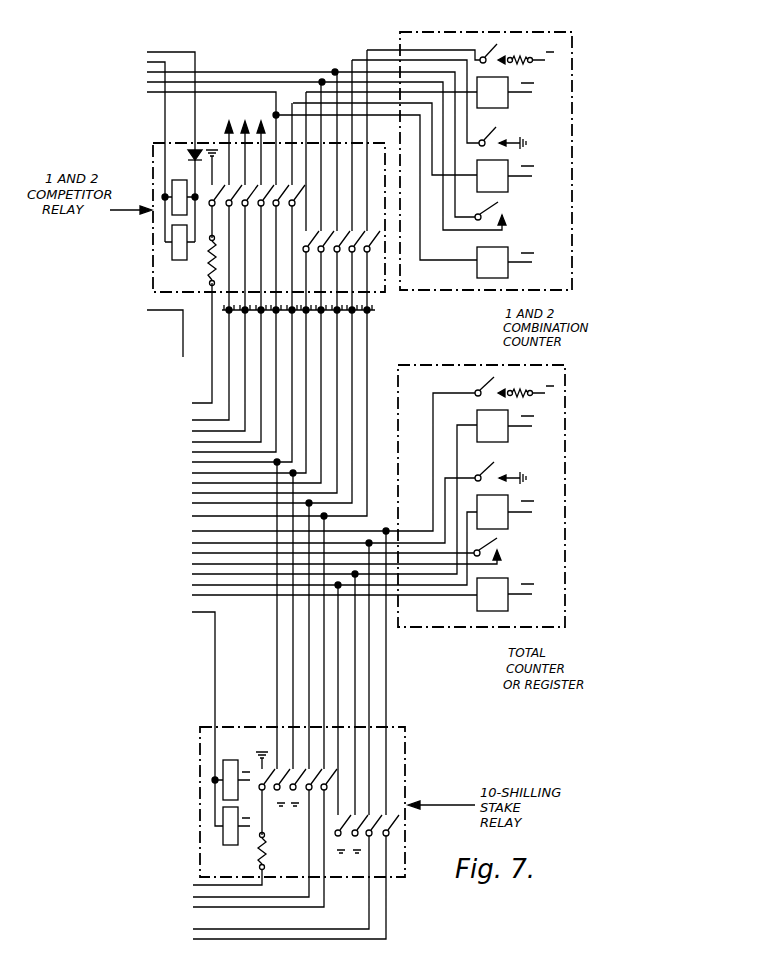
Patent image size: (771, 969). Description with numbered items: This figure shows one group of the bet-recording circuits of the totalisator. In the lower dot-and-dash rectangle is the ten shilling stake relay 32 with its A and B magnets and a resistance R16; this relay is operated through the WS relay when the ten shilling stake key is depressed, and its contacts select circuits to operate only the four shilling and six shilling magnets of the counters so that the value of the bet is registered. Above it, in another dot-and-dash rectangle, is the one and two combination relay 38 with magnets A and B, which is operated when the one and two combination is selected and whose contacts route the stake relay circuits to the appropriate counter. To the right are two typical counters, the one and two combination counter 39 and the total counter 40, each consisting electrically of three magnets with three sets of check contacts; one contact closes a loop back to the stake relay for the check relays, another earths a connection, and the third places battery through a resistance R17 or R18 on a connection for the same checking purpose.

The 10 shilling stake relay 32 is at (299, 806).
The 1 & 2 combination relay 38 is at (269, 217).
The 1 & 2 combination counter 39 is at (486, 179).
The total counter 40 is at (481, 516).
The resistance R16 is at (244, 837).
The resistance R17 is at (526, 52).
The resistance R18 is at (526, 385).